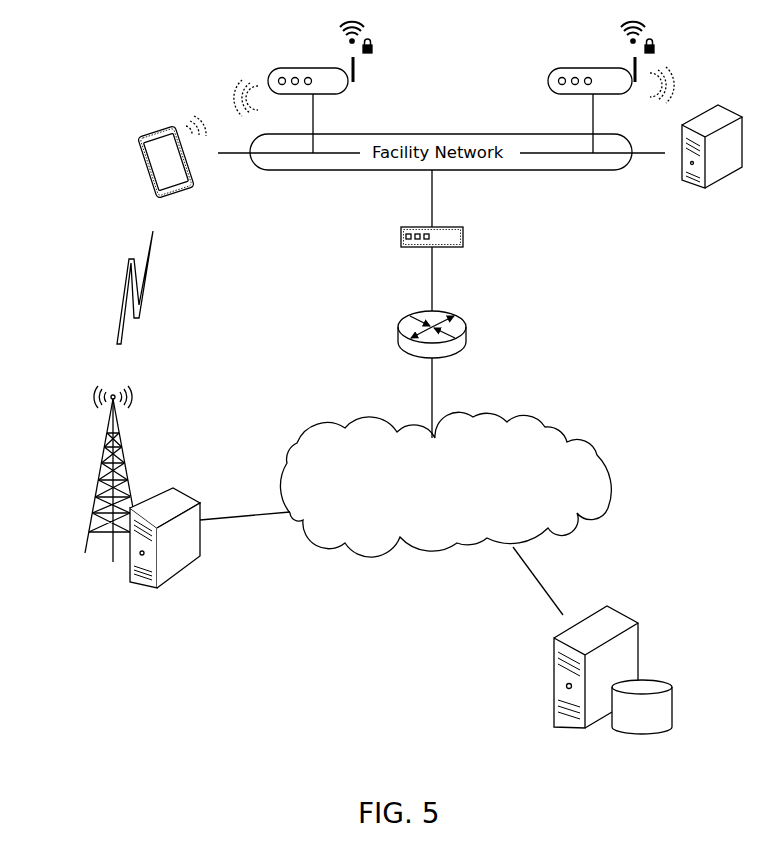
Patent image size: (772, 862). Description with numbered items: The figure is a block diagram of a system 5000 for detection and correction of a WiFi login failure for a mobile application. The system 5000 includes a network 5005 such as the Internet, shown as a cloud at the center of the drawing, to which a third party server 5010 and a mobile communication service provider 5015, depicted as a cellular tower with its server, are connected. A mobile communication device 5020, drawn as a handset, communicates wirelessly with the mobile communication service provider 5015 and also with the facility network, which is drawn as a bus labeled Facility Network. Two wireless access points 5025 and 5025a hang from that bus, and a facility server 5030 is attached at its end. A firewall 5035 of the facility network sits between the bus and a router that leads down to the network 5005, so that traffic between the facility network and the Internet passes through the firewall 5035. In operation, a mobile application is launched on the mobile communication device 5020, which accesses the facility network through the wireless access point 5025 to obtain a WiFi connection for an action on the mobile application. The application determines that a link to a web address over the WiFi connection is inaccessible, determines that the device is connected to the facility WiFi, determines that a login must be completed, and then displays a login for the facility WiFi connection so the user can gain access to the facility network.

The system 5000 is at (86, 55).
The network 5005 is at (337, 422).
The third party server 5010 is at (553, 667).
The mobile communication service provider 5015 is at (90, 533).
The mobile communication device 5020 is at (137, 137).
The wireless access point 5025 is at (288, 68).
The wireless access point 5025a is at (572, 68).
The facility server 5030 is at (712, 190).
The firewall 5035 is at (476, 238).